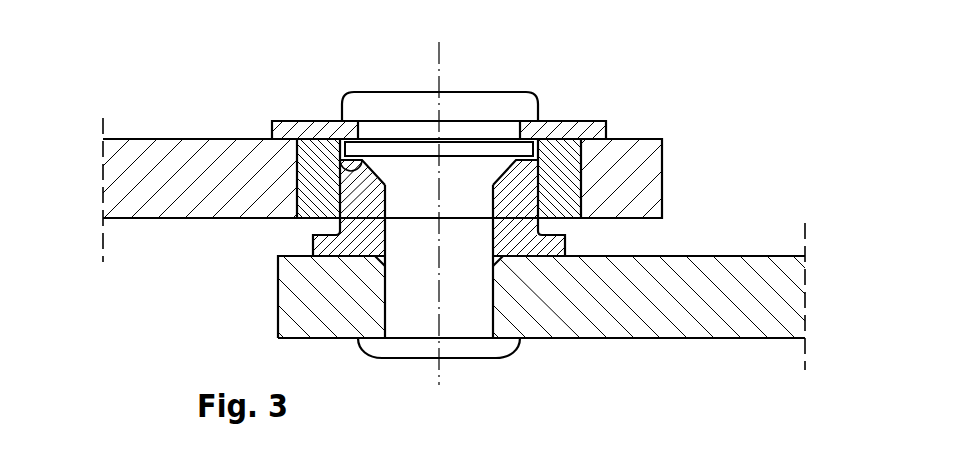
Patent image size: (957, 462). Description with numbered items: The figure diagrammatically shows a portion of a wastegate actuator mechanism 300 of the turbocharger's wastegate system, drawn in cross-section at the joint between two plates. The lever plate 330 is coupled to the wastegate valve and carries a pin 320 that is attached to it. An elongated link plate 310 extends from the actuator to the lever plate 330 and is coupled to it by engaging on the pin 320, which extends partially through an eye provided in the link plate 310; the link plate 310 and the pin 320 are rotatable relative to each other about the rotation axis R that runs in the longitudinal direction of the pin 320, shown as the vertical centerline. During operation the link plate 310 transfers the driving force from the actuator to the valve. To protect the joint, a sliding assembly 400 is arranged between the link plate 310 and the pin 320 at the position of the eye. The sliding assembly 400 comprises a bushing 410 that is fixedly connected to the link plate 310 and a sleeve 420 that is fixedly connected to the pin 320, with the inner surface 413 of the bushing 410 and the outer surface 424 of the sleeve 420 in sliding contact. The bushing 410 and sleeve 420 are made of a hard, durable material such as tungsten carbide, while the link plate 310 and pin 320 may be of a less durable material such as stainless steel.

The wastegate actuator mechanism 300 is at (454, 199).
The link plate 310 is at (633, 182).
The pin 320 is at (485, 108).
The lever plate 330 is at (710, 300).
The sliding assembly 400 is at (420, 185).
The bushing 410 is at (522, 195).
The inner surface of the bushing 413 is at (357, 170).
The sleeve 420 is at (534, 152).
The outer surface of the sleeve 424 is at (335, 146).